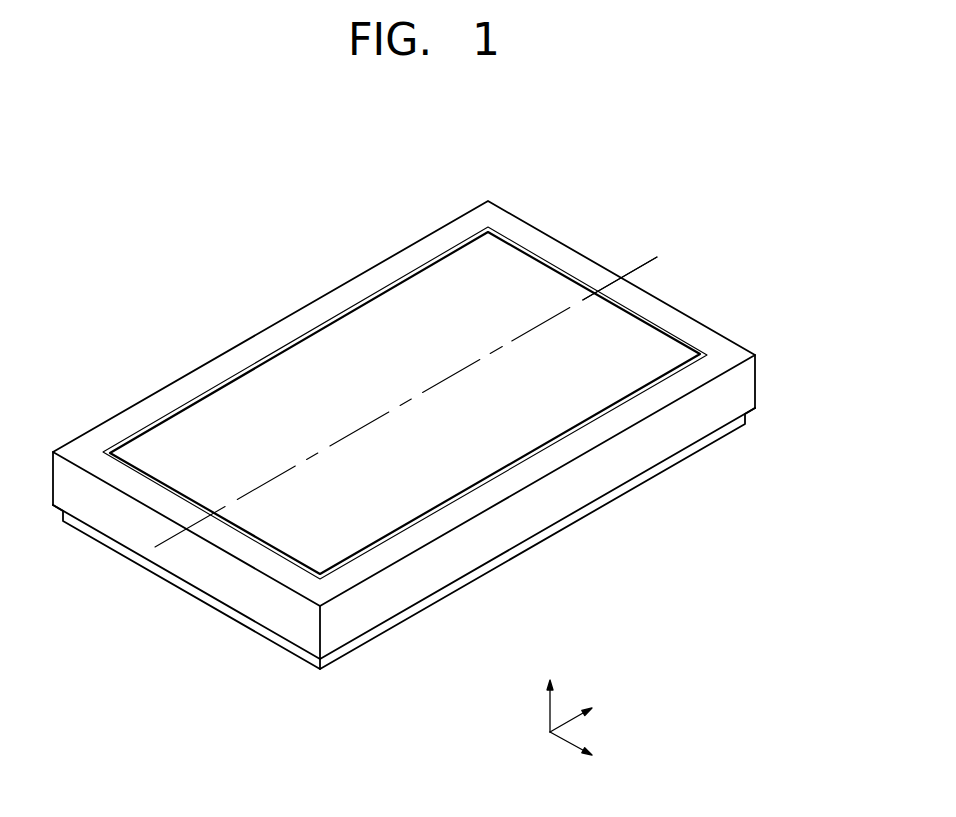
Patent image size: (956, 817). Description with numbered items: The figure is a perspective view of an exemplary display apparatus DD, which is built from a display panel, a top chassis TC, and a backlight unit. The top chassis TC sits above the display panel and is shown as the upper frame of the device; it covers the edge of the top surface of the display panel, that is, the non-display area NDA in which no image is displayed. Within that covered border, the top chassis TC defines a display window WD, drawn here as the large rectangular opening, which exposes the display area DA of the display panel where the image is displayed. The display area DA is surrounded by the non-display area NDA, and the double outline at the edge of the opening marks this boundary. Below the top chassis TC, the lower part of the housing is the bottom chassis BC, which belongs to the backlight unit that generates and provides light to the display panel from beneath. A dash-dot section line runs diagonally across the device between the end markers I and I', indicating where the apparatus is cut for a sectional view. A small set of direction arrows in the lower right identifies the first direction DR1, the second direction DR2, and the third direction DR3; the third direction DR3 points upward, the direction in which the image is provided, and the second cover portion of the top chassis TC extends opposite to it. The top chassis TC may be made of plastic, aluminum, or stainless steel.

The display apparatus DD is at (213, 232).
The top chassis TC is at (755, 380).
The bottom chassis BC is at (592, 513).
The non-display area NDA is at (398, 271).
The display area DA is at (352, 345).
The display window WD is at (243, 428).
The section line I is at (406, 417).
The section line I' is at (643, 278).
The first direction DR1 is at (591, 750).
The second direction DR2 is at (591, 715).
The third direction DR3 is at (550, 693).